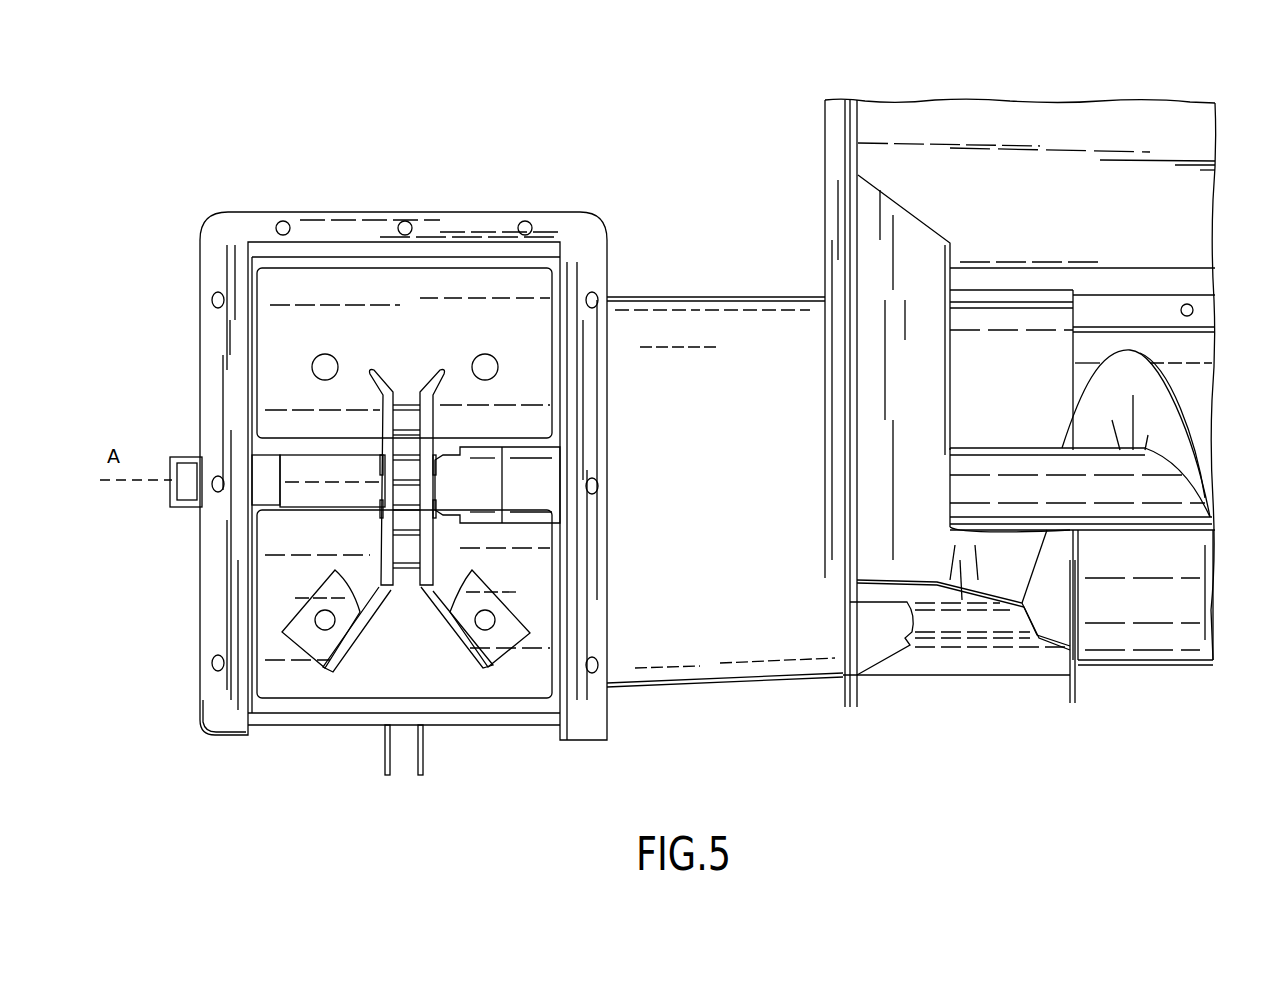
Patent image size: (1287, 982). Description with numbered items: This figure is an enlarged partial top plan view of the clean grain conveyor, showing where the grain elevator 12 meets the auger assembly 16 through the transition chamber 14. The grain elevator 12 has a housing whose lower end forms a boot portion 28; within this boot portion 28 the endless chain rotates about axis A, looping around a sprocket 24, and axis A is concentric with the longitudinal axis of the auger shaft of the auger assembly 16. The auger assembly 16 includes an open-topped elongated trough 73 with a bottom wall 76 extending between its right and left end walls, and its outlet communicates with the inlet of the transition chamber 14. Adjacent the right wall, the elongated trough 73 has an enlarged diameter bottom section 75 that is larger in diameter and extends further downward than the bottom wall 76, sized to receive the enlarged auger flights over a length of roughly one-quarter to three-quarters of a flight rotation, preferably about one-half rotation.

The grain elevator 12 is at (158, 392).
The transition chamber 14 is at (645, 297).
The auger assembly 16 is at (992, 90).
The sprocket 24 is at (300, 493).
The boot portion 28 is at (200, 708).
The elongated trough 73 is at (1213, 567).
The enlarged diameter bottom section 75 is at (953, 678).
The bottom wall 76 is at (1143, 662).